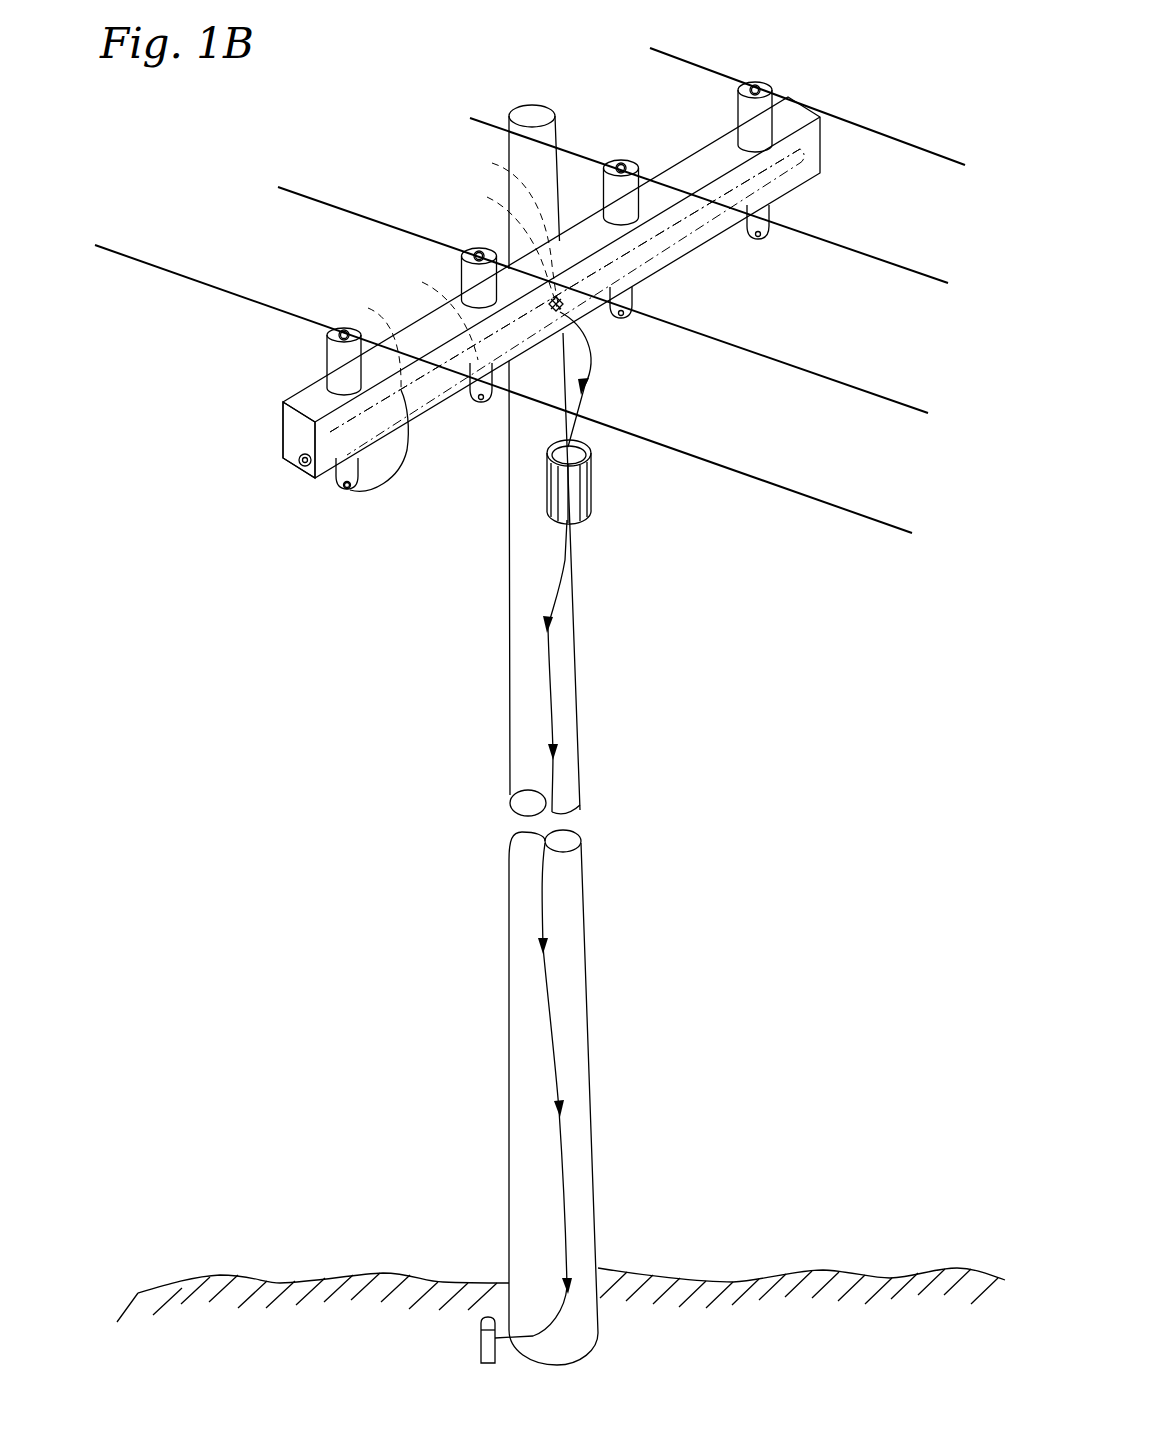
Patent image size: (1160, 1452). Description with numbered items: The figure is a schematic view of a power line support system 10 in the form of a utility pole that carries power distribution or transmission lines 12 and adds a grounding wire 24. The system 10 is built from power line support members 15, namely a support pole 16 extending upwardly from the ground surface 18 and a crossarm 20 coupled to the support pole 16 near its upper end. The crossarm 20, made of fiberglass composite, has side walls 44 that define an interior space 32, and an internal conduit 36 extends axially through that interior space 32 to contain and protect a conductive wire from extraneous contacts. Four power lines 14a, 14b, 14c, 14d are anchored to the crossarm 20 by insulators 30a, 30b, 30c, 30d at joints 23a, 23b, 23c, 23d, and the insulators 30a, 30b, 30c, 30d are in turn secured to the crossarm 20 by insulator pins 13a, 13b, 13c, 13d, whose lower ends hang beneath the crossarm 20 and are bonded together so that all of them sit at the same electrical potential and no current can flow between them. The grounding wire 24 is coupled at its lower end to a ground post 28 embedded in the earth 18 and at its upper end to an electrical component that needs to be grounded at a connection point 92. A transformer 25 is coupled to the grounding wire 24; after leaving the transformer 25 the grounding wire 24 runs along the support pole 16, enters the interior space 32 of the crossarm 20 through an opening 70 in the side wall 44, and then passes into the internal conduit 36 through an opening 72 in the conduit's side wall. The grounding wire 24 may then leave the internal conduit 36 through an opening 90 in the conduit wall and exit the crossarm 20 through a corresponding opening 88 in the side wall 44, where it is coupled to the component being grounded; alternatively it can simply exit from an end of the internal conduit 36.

The power line support system 10 is at (410, 112).
The power distribution or transmission lines 12 is at (922, 122).
The insulator pin 13a is at (346, 482).
The insulator pin 13b is at (484, 402).
The insulator pin 13c is at (628, 318).
The insulator pin 13d is at (762, 243).
The power line 14a is at (893, 525).
The power line 14b is at (905, 402).
The power line 14c is at (922, 280).
The power line 14d is at (940, 160).
The power line support members 15 is at (575, 675).
The support pole 16 is at (510, 620).
The ground surface 18 is at (740, 1278).
The crossarm 20 is at (702, 243).
The joint 23a is at (343, 325).
The joint 23b is at (476, 248).
The joint 23c is at (618, 164).
The joint 23d is at (755, 82).
The grounding wire 24 is at (563, 1197).
The transformer 25 is at (590, 510).
The ground post 28 is at (483, 1316).
The insulator 30a is at (327, 362).
The insulator 30b is at (461, 286).
The insulator 30c is at (603, 186).
The insulator 30d is at (738, 112).
The interior space 32 is at (283, 431).
The internal conduit 36 is at (506, 231).
The side walls 44 is at (727, 150).
The opening 70 is at (585, 325).
The opening 72 is at (501, 245).
The opening 88 is at (410, 468).
The opening 90 is at (393, 344).
The connection point 92 is at (340, 508).